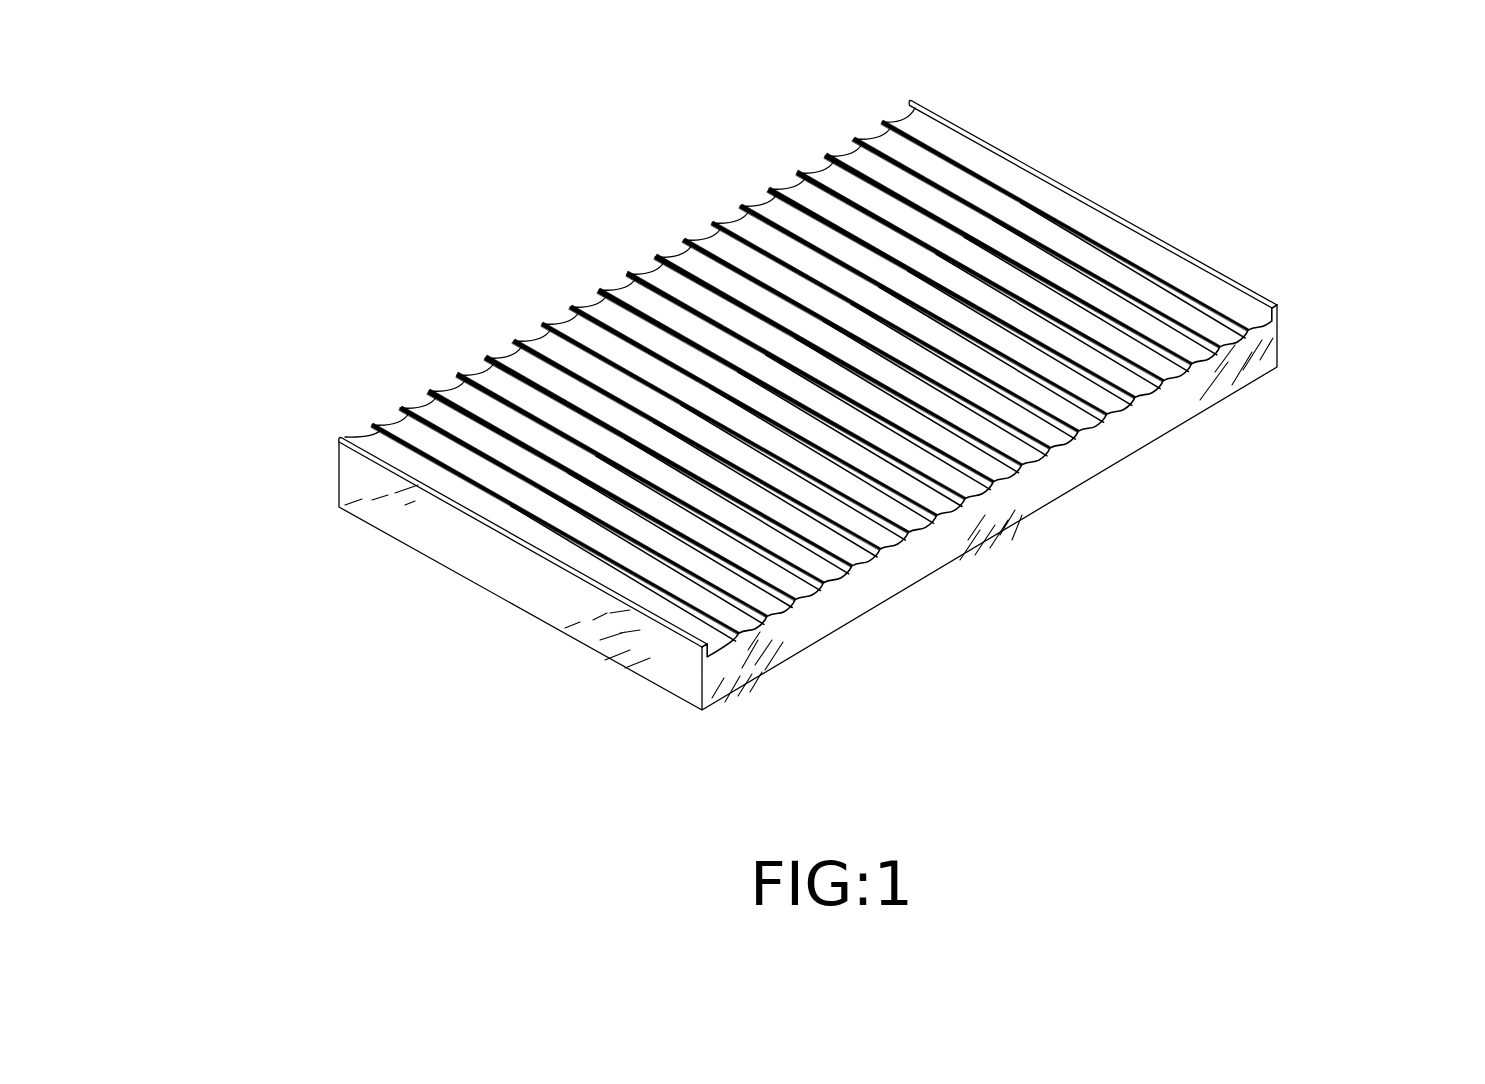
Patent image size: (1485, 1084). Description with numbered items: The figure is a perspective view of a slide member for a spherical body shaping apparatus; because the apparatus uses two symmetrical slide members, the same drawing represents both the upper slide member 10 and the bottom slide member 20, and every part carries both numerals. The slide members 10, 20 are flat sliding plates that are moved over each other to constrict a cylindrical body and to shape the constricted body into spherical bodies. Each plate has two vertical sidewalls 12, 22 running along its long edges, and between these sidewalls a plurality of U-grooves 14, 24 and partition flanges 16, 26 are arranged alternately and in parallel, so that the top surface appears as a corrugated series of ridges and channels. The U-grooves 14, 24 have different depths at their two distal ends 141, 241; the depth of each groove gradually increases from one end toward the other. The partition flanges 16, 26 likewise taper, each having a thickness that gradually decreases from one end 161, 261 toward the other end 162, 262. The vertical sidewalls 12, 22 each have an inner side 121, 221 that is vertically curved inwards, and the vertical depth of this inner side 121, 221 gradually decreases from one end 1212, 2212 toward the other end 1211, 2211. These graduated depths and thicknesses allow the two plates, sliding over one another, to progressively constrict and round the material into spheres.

The upper slide member 10 is at (812, 399).
The bottom slide member 20 is at (560, 267).
The vertical sidewall 12 is at (812, 399).
The vertical sidewall 22 is at (1279, 321).
The inner side 121 is at (801, 397).
The inner side 221 is at (1162, 258).
The end of inner side 1211 is at (883, 566).
The end of inner side 2211 is at (1278, 364).
The end of inner side 1212 is at (728, 323).
The end of inner side 2212 is at (915, 115).
The U-groove 14 is at (818, 371).
The U-groove 24 is at (478, 435).
The distal end of U-groove 141 is at (800, 401).
The distal end of U-groove 241 is at (705, 240).
The partition flange 16 is at (878, 340).
The partition flange 26 is at (1010, 226).
The end of partition flange 161 is at (1063, 420).
The end of partition flange 261 is at (1205, 307).
The end of partition flange 162 is at (630, 237).
The end of partition flange 262 is at (893, 130).